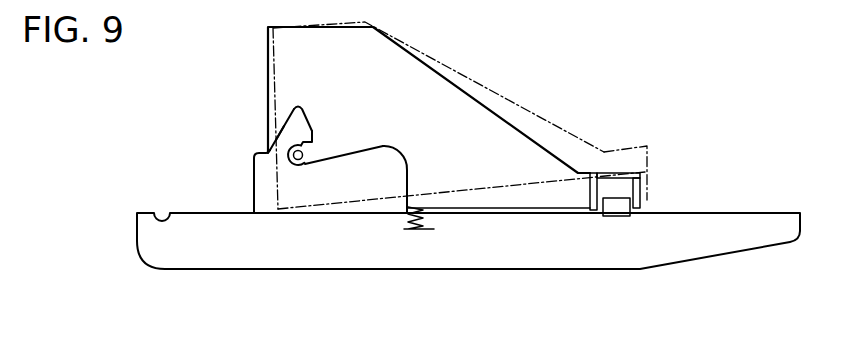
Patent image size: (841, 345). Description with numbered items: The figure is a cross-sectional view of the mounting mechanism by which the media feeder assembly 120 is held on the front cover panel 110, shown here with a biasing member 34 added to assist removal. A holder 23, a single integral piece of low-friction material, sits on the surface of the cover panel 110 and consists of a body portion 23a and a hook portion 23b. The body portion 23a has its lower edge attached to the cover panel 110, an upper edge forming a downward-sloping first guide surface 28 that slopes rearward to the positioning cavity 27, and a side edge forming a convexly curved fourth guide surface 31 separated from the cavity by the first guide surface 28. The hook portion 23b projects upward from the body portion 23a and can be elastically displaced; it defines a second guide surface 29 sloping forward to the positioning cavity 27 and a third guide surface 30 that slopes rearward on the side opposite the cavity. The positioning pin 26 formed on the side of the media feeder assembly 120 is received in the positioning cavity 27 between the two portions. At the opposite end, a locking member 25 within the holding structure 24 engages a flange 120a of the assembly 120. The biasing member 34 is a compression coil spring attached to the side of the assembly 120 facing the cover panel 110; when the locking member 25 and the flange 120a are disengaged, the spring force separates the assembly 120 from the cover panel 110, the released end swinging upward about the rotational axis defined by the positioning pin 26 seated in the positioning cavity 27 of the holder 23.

The front cover panel 110 is at (497, 273).
The holder 23 is at (252, 188).
The body portion 23a is at (362, 208).
The hook portion 23b is at (292, 112).
The holder 24 is at (667, 189).
The locking member 25 is at (614, 212).
The positioning pin 26 is at (316, 150).
The positioning cavity 27 is at (303, 166).
The first guide surface 28 is at (374, 147).
The second guide surface 29 is at (309, 121).
The third guide surface 30 is at (283, 128).
The fourth guide surface 31 is at (409, 183).
The biasing member 34 is at (438, 230).
The media feeder assembly 120 is at (473, 95).
The flange 120a is at (612, 143).